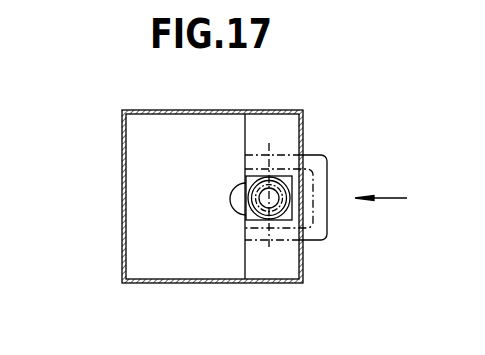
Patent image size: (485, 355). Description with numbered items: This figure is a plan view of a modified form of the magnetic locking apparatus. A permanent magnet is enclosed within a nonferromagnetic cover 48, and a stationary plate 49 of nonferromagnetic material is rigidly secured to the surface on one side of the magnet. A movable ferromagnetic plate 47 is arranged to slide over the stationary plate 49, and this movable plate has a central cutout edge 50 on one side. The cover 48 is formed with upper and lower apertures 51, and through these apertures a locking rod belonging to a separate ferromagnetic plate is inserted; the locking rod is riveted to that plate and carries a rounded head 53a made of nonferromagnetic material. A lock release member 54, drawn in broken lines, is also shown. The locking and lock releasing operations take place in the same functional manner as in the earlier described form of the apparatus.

The movable ferromagnetic plate 47 is at (153, 157).
The nonferromagnetic cover 48 is at (122, 201).
The stationary plate 49 is at (288, 130).
The central cutout edge 50 is at (241, 204).
The aperture 51 is at (280, 201).
The rounded head 53a is at (277, 206).
The lock release member 54 is at (327, 166).